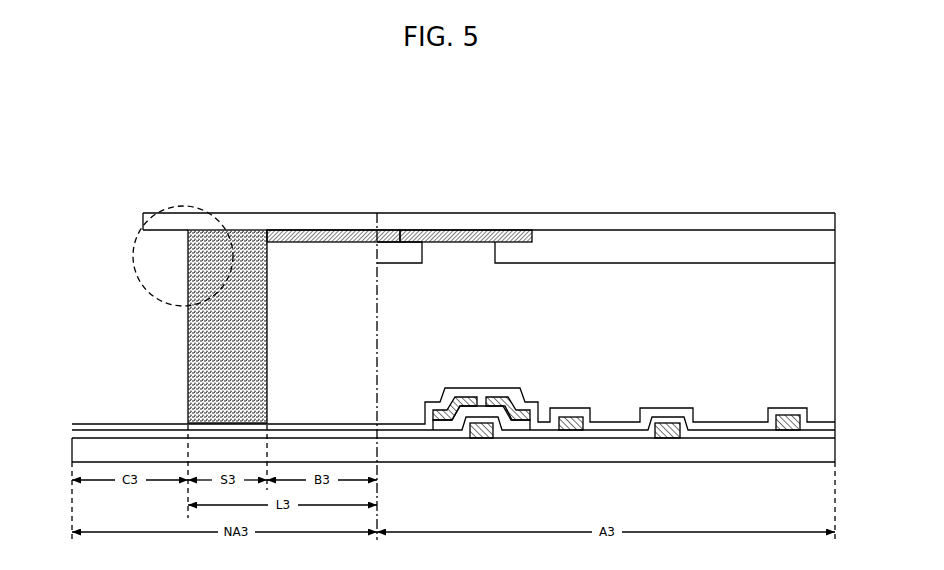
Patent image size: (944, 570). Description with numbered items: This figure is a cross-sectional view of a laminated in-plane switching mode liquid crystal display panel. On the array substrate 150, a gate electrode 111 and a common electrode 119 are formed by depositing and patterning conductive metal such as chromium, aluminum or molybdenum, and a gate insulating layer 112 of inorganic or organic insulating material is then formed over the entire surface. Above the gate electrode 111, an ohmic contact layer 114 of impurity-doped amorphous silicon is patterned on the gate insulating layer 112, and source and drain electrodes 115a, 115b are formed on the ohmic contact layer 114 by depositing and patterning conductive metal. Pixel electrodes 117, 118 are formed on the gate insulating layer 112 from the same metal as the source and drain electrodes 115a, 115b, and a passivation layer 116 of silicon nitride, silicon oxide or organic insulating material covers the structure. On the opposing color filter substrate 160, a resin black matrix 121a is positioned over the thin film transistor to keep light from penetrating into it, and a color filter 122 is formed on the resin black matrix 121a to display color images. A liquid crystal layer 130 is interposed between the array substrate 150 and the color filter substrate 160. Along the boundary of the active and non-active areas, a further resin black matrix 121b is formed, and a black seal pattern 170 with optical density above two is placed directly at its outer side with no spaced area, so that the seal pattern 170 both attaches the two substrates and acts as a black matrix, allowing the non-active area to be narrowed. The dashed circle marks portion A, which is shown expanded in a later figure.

The gate electrode 111 is at (479, 440).
The gate insulating layer 112 is at (126, 433).
The ohmic contact layer 114 is at (481, 398).
The source electrode 115a is at (462, 400).
The drain electrode 115b is at (500, 397).
The passivation layer 116 is at (160, 427).
The pixel electrode 117 is at (568, 418).
The pixel electrode 118 is at (787, 415).
The common electrode 119 is at (666, 425).
The resin black matrix 121a is at (430, 232).
The resin black matrix 121b is at (318, 232).
The color filter 122 is at (600, 238).
The liquid crystal layer 130 is at (820, 327).
The array substrate 150 is at (733, 447).
The color filter substrate 160 is at (516, 218).
The seal pattern 170 is at (190, 322).
The portion A is at (203, 195).